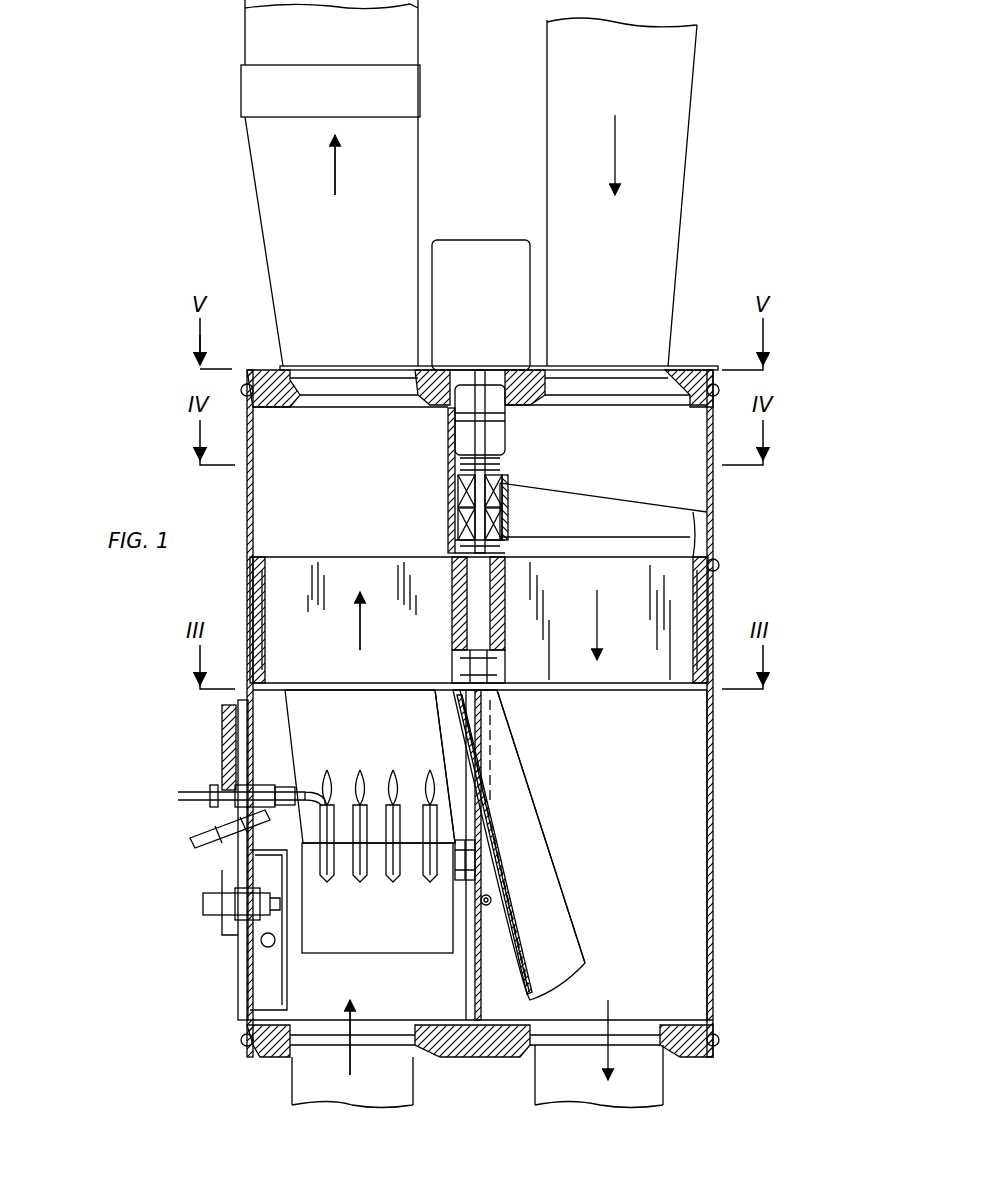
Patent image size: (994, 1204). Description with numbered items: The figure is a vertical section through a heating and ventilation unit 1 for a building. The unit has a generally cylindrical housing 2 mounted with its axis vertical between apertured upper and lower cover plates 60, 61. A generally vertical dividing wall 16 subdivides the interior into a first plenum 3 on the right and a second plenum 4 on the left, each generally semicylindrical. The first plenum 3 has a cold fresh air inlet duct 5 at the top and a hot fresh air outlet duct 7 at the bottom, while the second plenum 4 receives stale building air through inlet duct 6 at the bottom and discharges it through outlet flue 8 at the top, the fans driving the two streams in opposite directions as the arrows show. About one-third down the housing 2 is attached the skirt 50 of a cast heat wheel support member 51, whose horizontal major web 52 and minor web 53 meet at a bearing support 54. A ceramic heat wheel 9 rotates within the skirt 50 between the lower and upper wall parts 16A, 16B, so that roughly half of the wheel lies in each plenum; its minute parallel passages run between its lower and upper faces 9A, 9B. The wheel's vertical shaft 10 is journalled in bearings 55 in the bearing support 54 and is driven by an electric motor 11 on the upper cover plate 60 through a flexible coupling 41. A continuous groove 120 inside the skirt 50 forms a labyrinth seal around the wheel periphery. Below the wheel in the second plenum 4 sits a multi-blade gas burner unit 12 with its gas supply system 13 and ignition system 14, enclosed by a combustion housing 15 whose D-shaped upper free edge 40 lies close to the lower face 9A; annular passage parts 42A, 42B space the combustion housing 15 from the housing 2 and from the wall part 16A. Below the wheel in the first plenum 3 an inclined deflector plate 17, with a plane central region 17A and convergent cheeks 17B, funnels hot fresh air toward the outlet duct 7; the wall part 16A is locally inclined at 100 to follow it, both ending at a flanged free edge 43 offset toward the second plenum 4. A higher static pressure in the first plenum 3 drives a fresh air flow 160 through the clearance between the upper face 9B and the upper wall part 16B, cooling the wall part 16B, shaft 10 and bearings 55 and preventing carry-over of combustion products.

The heating and ventilation unit 1 is at (738, 548).
The housing 2 is at (713, 822).
The first plenum 3 is at (480, 496).
The second plenum 4 is at (439, 525).
The inlet duct 5 is at (655, 218).
The inlet duct 6 is at (336, 1105).
The outlet duct 7 is at (586, 1088).
The outlet duct 8 is at (283, 205).
The ceramic heat wheel 9 is at (300, 574).
The lower face of heat wheel 9A is at (313, 690).
The upper face of heat wheel 9B is at (297, 556).
The shaft 10 is at (455, 507).
The electric motor 11 is at (481, 305).
The gas burner unit 12 is at (377, 861).
The gas supply system 13 is at (205, 900).
The ignition system 14 is at (222, 798).
The combustion housing 15 is at (285, 732).
The dividing wall 16 is at (470, 992).
The lower part of dividing wall 16A is at (468, 968).
The upper part of dividing wall 16B is at (448, 452).
The deflector plate 17 is at (528, 795).
The central region of deflector plate 17A is at (510, 900).
The cheeks of deflector plate 17B is at (525, 850).
The upper free edge of combustion housing 40 is at (396, 683).
The flexible coupling 41 is at (495, 432).
The annular passage part 42A is at (270, 750).
The annular passage part 42B is at (460, 905).
The flanged free edge 43 is at (455, 690).
The skirt 50 is at (697, 690).
The heat wheel support member 51 is at (648, 492).
The major web 52 is at (450, 470).
The minor web 53 is at (597, 531).
The bearing support 54 is at (555, 483).
The bearings 55 is at (500, 535).
The upper cover plate 60 is at (283, 366).
The lower cover plate 61 is at (455, 1057).
The inclined portion of lower wall part 100 is at (442, 705).
The continuous groove 120 is at (265, 625).
The air flow 160 is at (430, 545).